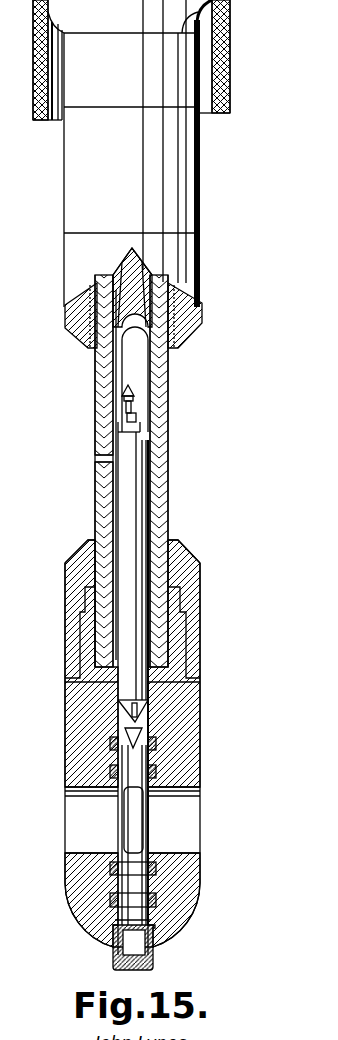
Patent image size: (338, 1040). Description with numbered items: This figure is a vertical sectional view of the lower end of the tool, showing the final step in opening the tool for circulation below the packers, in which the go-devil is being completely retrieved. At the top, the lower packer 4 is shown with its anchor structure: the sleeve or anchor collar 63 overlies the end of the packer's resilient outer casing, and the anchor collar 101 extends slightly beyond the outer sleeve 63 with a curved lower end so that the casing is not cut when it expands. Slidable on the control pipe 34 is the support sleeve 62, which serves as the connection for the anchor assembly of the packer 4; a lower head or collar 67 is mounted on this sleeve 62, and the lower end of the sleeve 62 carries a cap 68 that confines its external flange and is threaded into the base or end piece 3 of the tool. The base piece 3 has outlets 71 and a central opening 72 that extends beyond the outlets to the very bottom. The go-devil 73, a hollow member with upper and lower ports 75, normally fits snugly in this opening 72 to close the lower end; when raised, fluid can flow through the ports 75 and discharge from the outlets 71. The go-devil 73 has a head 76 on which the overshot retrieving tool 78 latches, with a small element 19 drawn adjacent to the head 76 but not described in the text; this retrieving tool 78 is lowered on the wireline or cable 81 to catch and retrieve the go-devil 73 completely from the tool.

The base or end piece 3 is at (188, 703).
The packer 4 is at (183, 16).
The valve square 19 is at (137, 417).
The control pipe 34 is at (108, 511).
The support sleeve 62 is at (170, 523).
The sleeve or anchor collar 63 is at (170, 182).
The lower head or collar 67 is at (186, 255).
The cap 68 is at (185, 562).
The outlets 71 is at (192, 822).
The central opening 72 is at (156, 758).
The go-devil 73 is at (136, 503).
The upper and lower ports 75 is at (137, 413).
The head 76 is at (134, 391).
The overshot retrieving tool 78 is at (127, 376).
The wireline or cable 81 is at (130, 258).
The anchor collar 101 is at (173, 80).